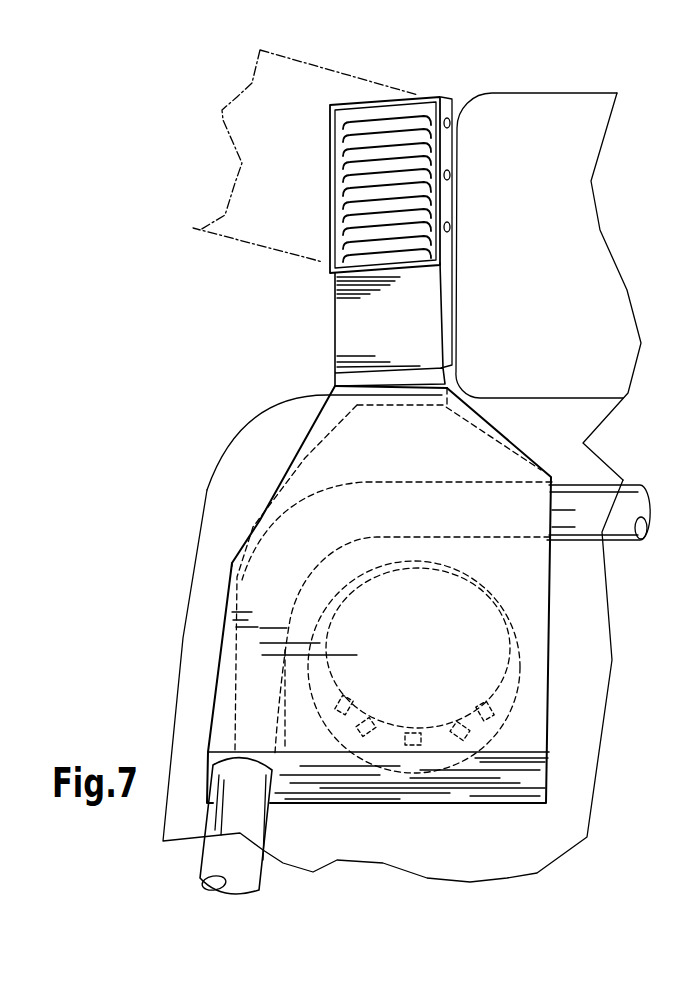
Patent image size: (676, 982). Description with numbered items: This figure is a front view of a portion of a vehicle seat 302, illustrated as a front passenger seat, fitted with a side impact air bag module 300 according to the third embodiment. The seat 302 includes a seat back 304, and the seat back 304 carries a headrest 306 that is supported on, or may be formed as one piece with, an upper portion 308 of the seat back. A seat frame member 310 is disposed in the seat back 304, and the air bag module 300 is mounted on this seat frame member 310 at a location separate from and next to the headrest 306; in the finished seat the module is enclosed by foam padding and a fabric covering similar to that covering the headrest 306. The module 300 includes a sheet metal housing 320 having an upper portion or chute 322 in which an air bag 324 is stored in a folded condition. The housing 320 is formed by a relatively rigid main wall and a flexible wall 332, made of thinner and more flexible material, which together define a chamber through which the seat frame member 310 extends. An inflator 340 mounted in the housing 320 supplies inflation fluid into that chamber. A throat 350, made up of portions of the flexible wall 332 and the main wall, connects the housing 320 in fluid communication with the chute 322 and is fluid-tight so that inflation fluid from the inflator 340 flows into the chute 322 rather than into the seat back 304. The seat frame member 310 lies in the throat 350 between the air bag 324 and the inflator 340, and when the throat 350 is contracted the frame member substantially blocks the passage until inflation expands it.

The air bag module 300 is at (258, 381).
The vehicle seat 302 is at (201, 516).
The seat back 304 is at (183, 670).
The headrest 306 is at (520, 92).
The upper portion of the seat back 308 is at (222, 460).
The seat frame member 310 is at (633, 487).
The housing 320 is at (545, 750).
The chute 322 is at (335, 322).
The air bag 324 is at (373, 212).
The flexible wall 332 is at (340, 463).
The inflator 340 is at (520, 667).
The throat 350 is at (231, 571).